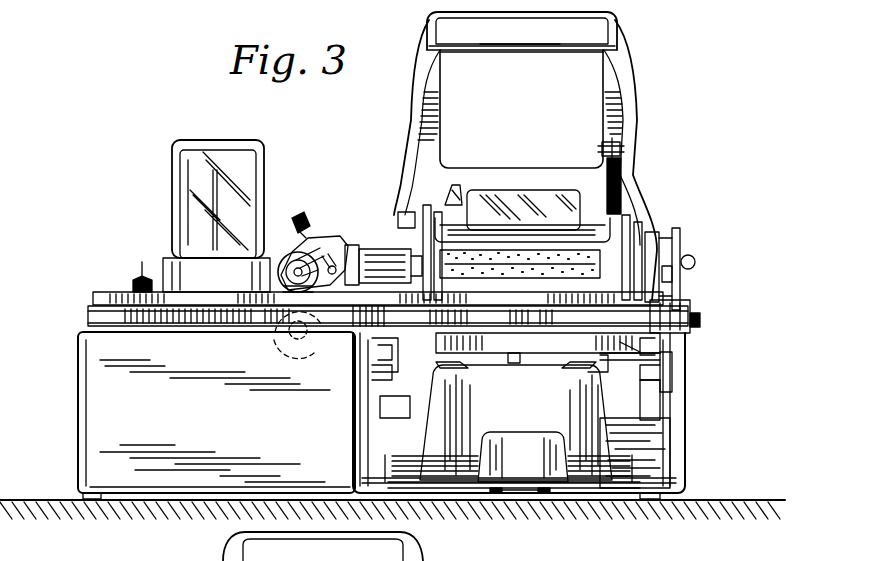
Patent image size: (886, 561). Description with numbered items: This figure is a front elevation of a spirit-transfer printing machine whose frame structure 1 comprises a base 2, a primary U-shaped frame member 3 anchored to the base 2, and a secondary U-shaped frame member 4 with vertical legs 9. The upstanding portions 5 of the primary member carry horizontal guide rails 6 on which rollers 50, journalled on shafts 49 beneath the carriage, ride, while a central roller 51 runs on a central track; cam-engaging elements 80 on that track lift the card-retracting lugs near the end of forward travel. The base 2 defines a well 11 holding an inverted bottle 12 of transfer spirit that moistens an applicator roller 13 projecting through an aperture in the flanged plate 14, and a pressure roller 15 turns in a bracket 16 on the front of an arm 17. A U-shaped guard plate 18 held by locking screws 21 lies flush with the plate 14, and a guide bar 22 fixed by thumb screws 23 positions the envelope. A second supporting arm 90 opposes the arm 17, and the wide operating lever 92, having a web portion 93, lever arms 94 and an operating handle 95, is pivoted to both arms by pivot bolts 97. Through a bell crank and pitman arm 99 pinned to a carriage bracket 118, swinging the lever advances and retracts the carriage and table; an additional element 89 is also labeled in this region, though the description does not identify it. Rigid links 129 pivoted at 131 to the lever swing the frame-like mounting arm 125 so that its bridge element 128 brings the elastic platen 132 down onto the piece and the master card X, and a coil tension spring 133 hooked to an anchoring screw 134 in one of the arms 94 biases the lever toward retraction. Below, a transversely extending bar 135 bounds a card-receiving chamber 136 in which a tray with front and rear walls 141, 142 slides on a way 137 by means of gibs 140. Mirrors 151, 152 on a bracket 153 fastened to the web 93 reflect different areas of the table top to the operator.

The frame structure 1 is at (66, 421).
The base 2 is at (195, 425).
The primary U-shaped frame member 3 is at (714, 484).
The secondary U-shaped frame member 4 is at (397, 403).
The upstanding portions 5 is at (353, 405).
The guide rails 6 is at (366, 372).
The legs 9 is at (388, 404).
The well 11 is at (230, 282).
The bottle 12 is at (258, 154).
The applicator roller 13 is at (292, 345).
The flanged plate 14 is at (205, 314).
The pressure roller 15 is at (283, 297).
The bracket 16 is at (321, 244).
The arm 17 is at (372, 258).
The guard plate 18 is at (690, 310).
The locking screws 21 is at (702, 322).
The guide bar 22 is at (108, 294).
The thumb screws 23 is at (135, 271).
The shafts 49 is at (640, 332).
The rollers 50 is at (372, 353).
The central roller 51 is at (522, 360).
The cam-engaging elements 80 is at (440, 364).
The plate 89 is at (570, 340).
The second supporting arm 90 is at (655, 268).
The operating lever 92 is at (567, 156).
The web portion 93 is at (553, 172).
The lever arms 94 is at (420, 103).
The operating handle 95 is at (530, 47).
The pivot bolts 97 is at (680, 280).
The pitman arm 99 is at (680, 392).
The bracket 118 is at (607, 368).
The mounting arm 125 is at (480, 186).
The bridge element 128 is at (535, 243).
The rigid links 129 is at (437, 246).
The pivotal connection 131 is at (420, 215).
The elastic platen 132 is at (519, 305).
The coil tension spring 133 is at (640, 180).
The anchoring screw 134 is at (622, 150).
The transversely extending bar 135 is at (668, 443).
The card-receiving chamber 136 is at (361, 487).
The way 137 is at (522, 492).
The gibs 140 is at (494, 494).
The front wall element 141 is at (533, 459).
The rear wall element 142 is at (505, 403).
The mirror 151 is at (520, 185).
The mirror 152 is at (440, 304).
The bracket 153 is at (450, 182).
The master card X is at (448, 460).